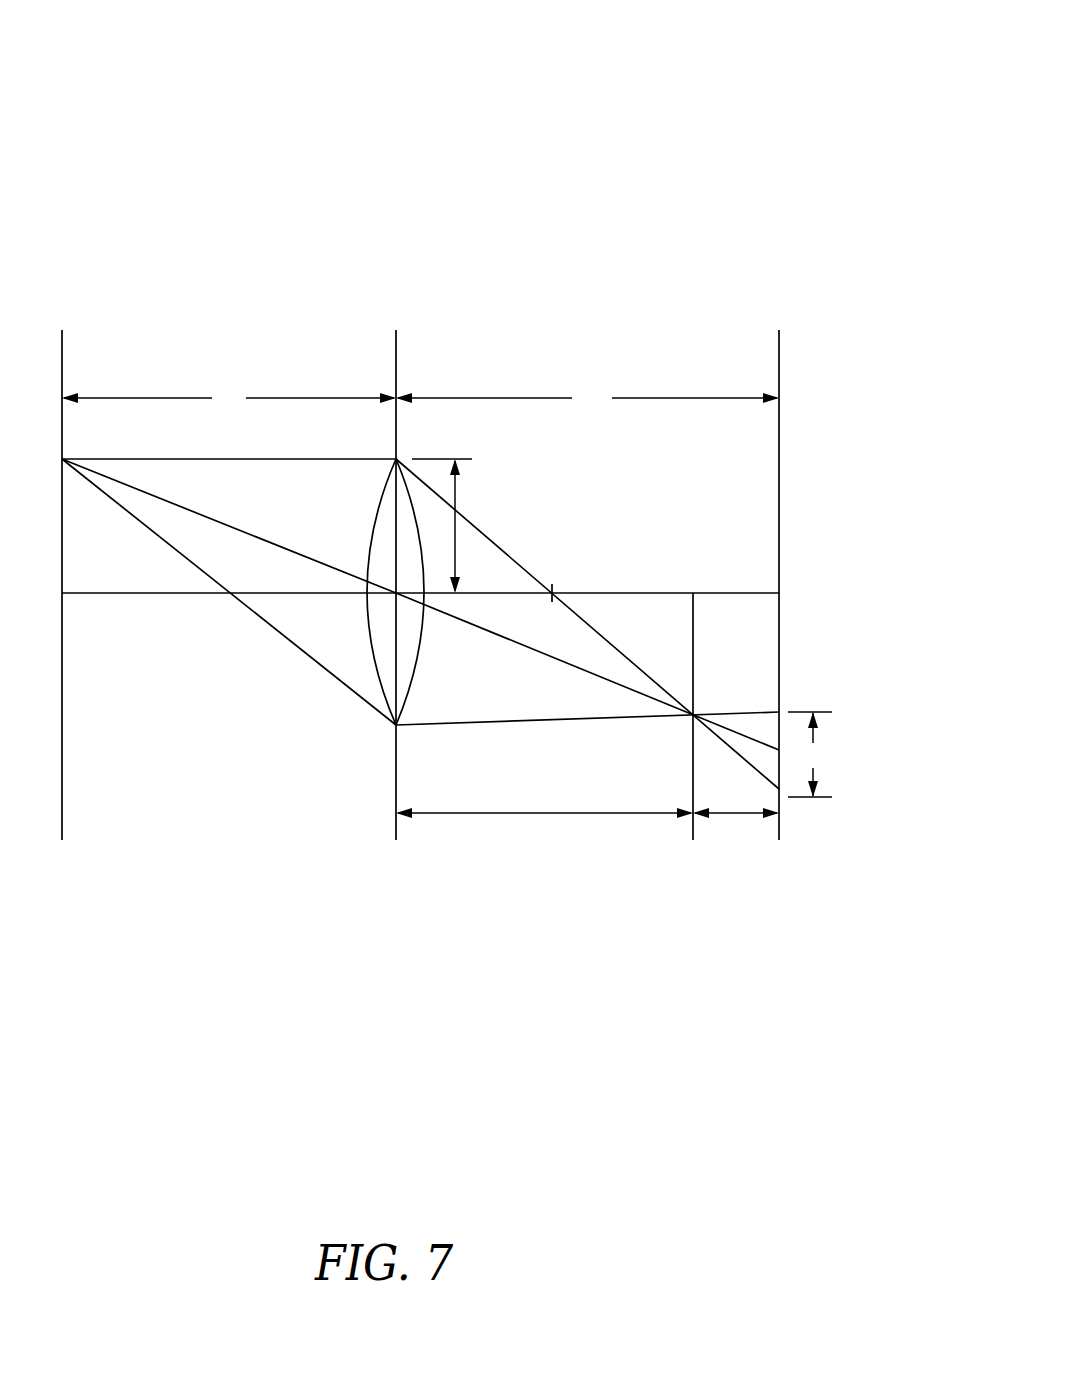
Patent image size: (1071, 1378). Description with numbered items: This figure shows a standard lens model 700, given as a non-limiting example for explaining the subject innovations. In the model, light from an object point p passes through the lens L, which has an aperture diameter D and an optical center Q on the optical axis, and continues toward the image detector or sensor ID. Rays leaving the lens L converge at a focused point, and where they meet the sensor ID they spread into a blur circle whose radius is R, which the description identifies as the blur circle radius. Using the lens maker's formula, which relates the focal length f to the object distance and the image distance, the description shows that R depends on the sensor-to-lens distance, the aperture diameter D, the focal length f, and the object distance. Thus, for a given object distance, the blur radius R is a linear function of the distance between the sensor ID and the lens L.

The lens model 700 is at (640, 78).
The lens L is at (395, 576).
The object point p is at (209, 586).
The sensor ID is at (774, 570).
The optical center Q is at (420, 609).
The aperture diameter D is at (443, 526).
The focal length f is at (551, 578).
The blur circle radius R is at (819, 754).